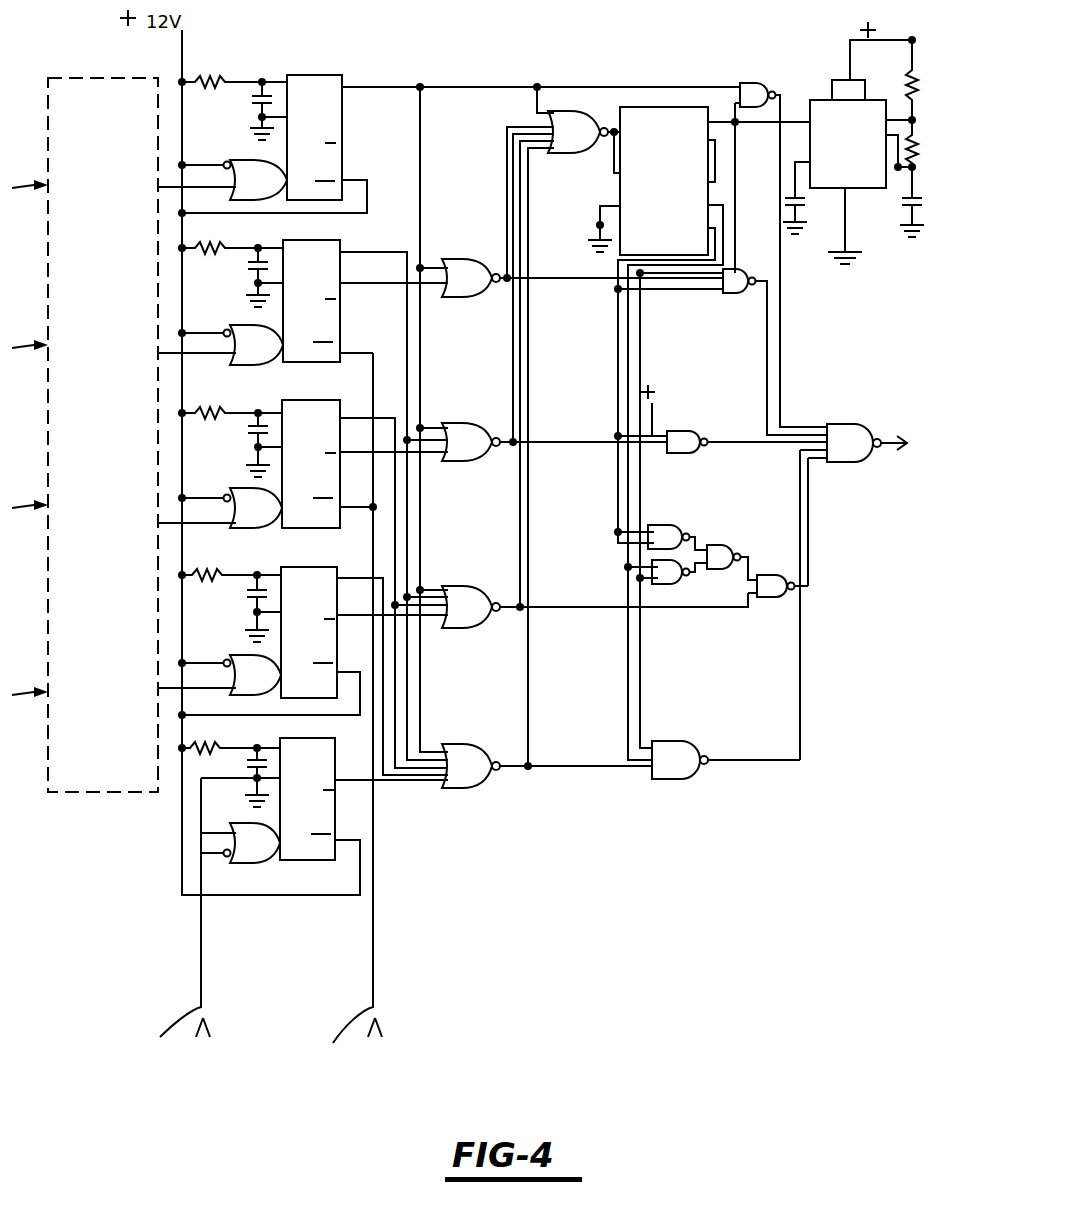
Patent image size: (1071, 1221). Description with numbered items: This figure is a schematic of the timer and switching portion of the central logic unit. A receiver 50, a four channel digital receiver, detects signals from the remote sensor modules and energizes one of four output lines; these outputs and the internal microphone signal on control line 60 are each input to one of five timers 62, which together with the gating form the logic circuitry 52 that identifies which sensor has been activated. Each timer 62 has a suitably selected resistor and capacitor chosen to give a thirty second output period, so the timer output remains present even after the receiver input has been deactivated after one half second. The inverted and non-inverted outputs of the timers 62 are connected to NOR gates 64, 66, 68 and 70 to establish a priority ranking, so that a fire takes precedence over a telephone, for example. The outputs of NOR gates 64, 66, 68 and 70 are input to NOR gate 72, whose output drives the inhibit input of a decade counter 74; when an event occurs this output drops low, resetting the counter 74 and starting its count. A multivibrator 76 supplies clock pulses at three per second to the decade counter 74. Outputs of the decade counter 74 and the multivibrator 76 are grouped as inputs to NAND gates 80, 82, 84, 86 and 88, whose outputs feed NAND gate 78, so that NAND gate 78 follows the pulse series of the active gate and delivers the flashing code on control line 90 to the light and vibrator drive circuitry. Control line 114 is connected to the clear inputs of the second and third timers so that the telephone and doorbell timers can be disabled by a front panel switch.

The receiver 50 is at (108, 793).
The logic circuitry 52 is at (514, 793).
The control line 60 is at (175, 925).
The timer 62 is at (343, 107).
The NOR gate 64 is at (462, 260).
The NOR gate 66 is at (462, 424).
The NOR gate 68 is at (462, 588).
The NOR gate 70 is at (462, 746).
The NOR gate 72 is at (578, 112).
The decade counter 74 is at (630, 113).
The multivibrator 76 is at (810, 110).
The NAND gate 78 is at (844, 426).
The NAND gate 80 is at (748, 83).
The NAND gate 82 is at (738, 276).
The NAND gate 84 is at (702, 436).
The NAND gate 86 is at (778, 575).
The NAND gate 88 is at (690, 742).
The control line 90 is at (898, 452).
The control line 114 is at (341, 714).